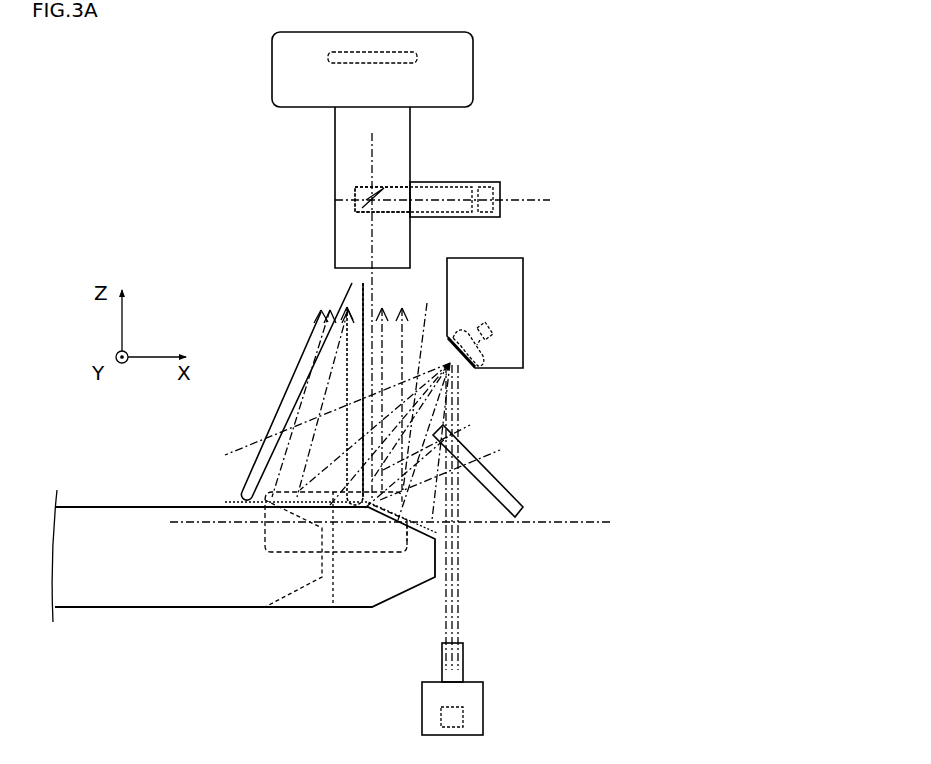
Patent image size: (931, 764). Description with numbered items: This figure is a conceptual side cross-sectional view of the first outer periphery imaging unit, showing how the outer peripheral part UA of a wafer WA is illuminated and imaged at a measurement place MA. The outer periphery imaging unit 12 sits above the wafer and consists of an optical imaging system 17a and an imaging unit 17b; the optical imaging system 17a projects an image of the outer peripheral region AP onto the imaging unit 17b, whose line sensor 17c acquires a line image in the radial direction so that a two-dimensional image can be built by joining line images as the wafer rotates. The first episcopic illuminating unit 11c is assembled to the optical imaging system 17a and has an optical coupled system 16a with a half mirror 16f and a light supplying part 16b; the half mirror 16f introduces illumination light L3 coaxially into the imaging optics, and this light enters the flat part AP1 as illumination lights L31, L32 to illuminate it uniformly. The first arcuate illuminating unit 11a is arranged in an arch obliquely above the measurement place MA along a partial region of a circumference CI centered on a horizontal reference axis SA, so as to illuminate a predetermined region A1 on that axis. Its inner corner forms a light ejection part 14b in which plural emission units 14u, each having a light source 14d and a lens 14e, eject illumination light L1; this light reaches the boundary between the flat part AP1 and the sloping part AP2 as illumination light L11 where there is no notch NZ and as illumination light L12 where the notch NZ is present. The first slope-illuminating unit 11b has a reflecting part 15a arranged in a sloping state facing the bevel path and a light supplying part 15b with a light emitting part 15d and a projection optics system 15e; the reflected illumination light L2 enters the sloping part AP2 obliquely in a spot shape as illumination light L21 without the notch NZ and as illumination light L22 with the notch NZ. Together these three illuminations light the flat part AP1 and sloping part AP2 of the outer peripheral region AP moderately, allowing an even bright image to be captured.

The outer periphery imaging unit 12 is at (487, 100).
The optical imaging system 17a is at (335, 243).
The imaging unit 17b is at (272, 88).
The line sensor 17c is at (330, 58).
The half mirror 16f is at (358, 193).
The optical coupled system 16a is at (446, 216).
The light supplying part 16b is at (484, 216).
The first episcopic illuminating unit 11c is at (458, 182).
The first arcuate illuminating unit 11a is at (523, 293).
The emission unit 14u is at (490, 314).
The light source 14d is at (494, 329).
The lens 14e is at (481, 362).
The light ejection part 14b is at (475, 368).
The first slope-illuminating unit 11b is at (537, 460).
The reflecting part 15a is at (502, 495).
The projection optics system 15e is at (463, 667).
The light supplying part 15b is at (483, 700).
The light emitting part 15d is at (463, 717).
The outer peripheral part UA is at (150, 607).
The notch NZ is at (300, 590).
The predetermined region A1 is at (274, 552).
The flat part AP1 is at (340, 500).
The sloping part AP2 is at (407, 545).
The outer peripheral region AP is at (422, 645).
The wafer WA is at (72, 481).
The measurement place MA is at (208, 491).
The reference axis SA is at (582, 526).
The illumination light L3 is at (283, 394).
The illumination light L31 is at (362, 420).
The illumination light L32 is at (278, 432).
The illumination light L12 is at (411, 386).
The illumination light L11 is at (341, 431).
The illumination light L1 is at (462, 400).
The illumination light L2 is at (463, 580).
The illumination light L21 is at (470, 540).
The illumination light L22 is at (477, 520).
The circumference CI is at (460, 615).